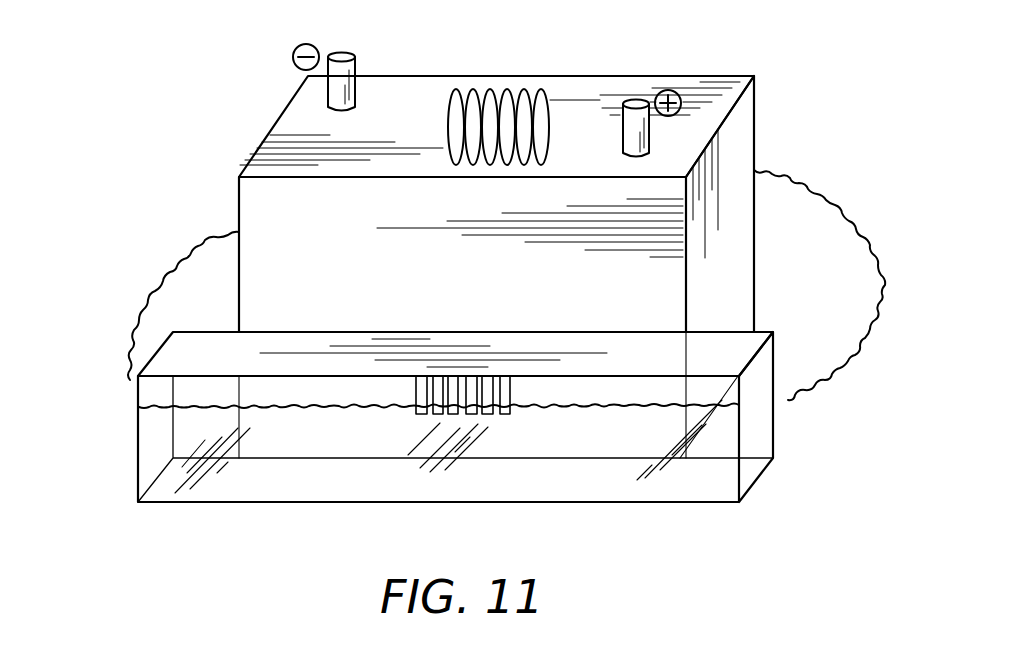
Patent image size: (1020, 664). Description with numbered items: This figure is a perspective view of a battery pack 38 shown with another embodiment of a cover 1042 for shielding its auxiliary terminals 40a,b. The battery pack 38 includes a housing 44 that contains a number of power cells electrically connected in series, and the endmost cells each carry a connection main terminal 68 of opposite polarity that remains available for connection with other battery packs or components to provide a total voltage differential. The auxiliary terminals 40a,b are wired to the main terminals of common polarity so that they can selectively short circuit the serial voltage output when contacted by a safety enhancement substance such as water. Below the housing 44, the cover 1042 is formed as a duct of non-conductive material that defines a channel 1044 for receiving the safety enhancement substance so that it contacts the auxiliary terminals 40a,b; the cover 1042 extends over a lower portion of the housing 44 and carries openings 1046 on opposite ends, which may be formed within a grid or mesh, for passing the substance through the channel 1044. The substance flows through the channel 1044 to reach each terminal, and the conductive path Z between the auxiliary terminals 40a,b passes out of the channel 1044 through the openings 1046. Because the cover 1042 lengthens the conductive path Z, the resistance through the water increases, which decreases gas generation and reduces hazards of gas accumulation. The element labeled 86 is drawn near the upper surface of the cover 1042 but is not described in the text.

The battery pack 38 is at (782, 60).
The housing 44 is at (755, 122).
The connection main terminal 68 is at (343, 54).
The auxiliary terminals 40a,b is at (480, 395).
The tray top surface 86 is at (773, 322).
The cover 1042 is at (763, 477).
The channel 1044 is at (603, 454).
The openings 1046 is at (148, 412).
The conductive path Z is at (170, 272).